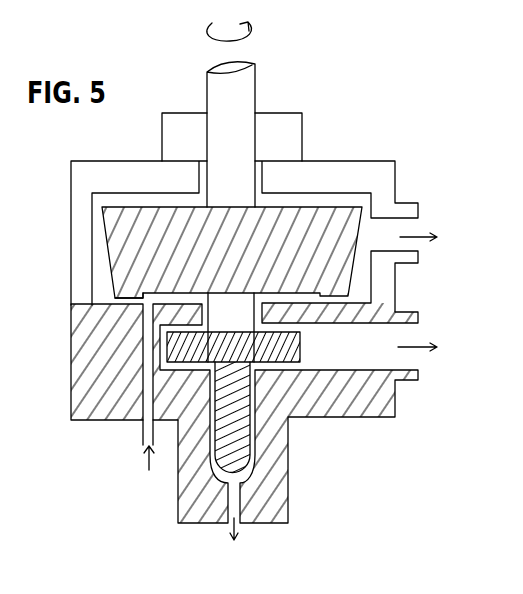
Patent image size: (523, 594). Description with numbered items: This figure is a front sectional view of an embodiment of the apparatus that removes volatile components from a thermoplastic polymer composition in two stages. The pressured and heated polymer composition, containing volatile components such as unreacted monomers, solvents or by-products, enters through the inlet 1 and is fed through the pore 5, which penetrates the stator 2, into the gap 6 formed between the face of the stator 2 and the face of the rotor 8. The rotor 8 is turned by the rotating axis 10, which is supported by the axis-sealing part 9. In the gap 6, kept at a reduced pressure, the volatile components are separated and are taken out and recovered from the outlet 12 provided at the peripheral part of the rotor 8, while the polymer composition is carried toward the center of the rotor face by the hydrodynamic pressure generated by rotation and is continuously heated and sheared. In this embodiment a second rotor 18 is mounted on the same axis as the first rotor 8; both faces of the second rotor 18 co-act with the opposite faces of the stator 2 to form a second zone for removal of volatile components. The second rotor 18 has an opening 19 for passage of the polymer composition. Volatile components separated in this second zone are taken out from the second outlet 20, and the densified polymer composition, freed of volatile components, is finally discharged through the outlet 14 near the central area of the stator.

The inlet 1 is at (148, 458).
The stator 2 is at (85, 362).
The pore (nozzle) 5 is at (223, 413).
The gap 6 is at (96, 277).
The rotor 8 is at (268, 231).
The axis-sealing part 9 is at (252, 134).
The rotating axis 10 is at (237, 112).
The outlet 12 is at (434, 238).
The outlet 14 is at (235, 543).
The second rotor 18 is at (259, 347).
The opening 19 is at (277, 411).
The second outlet 20 is at (434, 348).